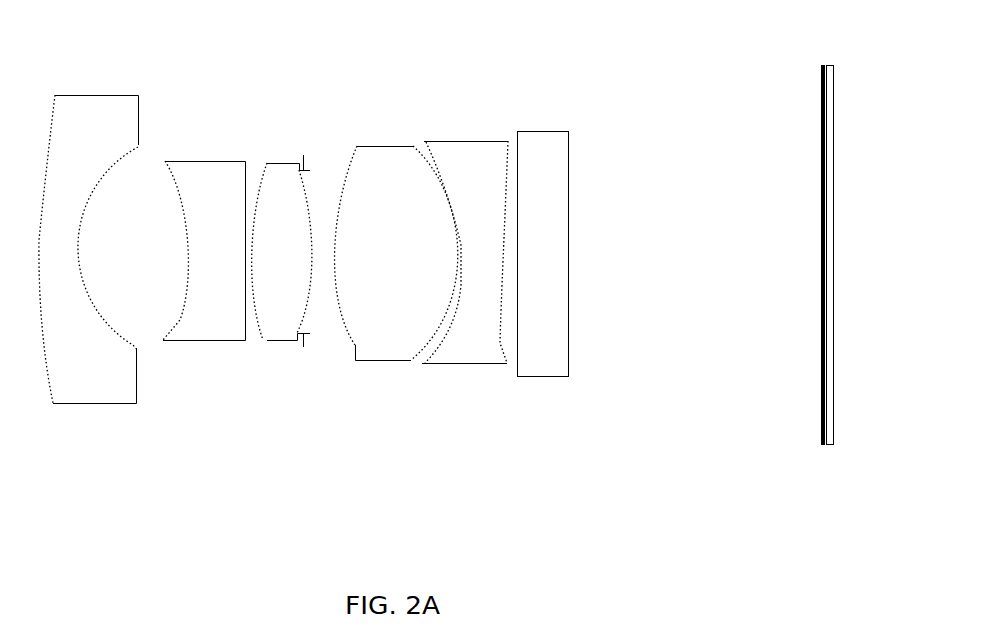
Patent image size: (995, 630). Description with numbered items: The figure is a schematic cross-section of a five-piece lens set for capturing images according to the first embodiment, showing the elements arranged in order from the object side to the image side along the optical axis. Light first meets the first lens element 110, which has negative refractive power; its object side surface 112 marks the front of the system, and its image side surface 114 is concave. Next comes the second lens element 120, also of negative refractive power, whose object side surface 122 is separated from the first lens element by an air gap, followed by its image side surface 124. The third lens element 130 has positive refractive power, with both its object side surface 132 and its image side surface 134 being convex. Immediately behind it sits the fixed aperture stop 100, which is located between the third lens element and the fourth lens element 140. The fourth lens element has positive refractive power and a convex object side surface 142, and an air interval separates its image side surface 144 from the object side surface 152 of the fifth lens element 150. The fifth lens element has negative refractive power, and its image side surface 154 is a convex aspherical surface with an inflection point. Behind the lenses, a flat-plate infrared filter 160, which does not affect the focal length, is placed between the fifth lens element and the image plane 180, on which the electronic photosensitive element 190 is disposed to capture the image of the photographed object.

The fixed aperture stop 100 is at (304, 156).
The first lens element 110 is at (77, 263).
The object side surface of the first lens element 112 is at (50, 372).
The image side surface of the first lens element 114 is at (130, 343).
The second lens element 120 is at (193, 263).
The object side surface of the second lens element 122 is at (181, 336).
The image-side surface of second lens element 124 is at (244, 320).
The third lens element 130 is at (275, 263).
The object side surface of the third lens element 132 is at (262, 341).
The image side surface of the third lens element 134 is at (297, 335).
The fourth lens element 140 is at (392, 263).
The object side surface of the fourth lens element 142 is at (353, 345).
The image side surface of the fourth lens element 144 is at (428, 345).
The fifth lens element 150 is at (463, 263).
The object side surface of the fifth lens element 152 is at (427, 363).
The image side surface of the fifth lens element 154 is at (505, 344).
The infrared filter 160 is at (549, 131).
The image plane 180 is at (822, 88).
The electronic photosensitive element 190 is at (835, 92).